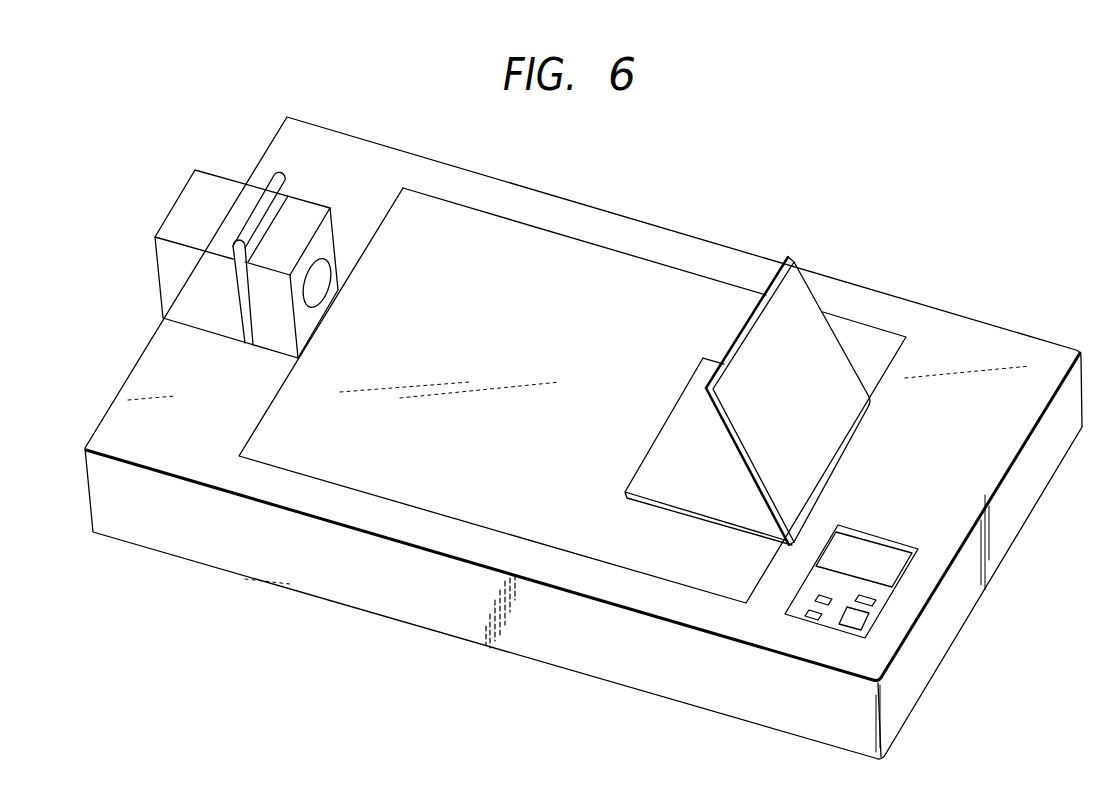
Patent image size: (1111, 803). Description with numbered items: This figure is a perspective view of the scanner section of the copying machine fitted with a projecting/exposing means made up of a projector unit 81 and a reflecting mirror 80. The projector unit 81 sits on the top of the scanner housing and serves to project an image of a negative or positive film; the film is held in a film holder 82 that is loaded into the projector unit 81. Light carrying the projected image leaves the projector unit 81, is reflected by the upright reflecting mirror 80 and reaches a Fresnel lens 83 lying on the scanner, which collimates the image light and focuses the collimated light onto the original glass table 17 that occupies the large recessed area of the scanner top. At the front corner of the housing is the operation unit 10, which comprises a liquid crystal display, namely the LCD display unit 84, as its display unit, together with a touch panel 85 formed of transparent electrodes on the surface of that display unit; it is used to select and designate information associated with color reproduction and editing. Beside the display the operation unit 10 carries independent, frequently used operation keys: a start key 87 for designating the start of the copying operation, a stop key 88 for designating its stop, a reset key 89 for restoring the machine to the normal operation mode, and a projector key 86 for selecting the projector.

The operation unit 10 is at (841, 528).
The original glass table 17 is at (603, 250).
The reflecting mirror 80 is at (745, 321).
The projector unit 81 is at (178, 193).
The film holder 82 is at (296, 176).
The Fresnel lens 83 is at (677, 498).
The LCD display unit 84 is at (958, 562).
The touch panel 85 is at (894, 558).
The projector key 86 is at (878, 600).
The start key 87 is at (847, 628).
The stop key 88 is at (807, 617).
The reset key 89 is at (815, 597).